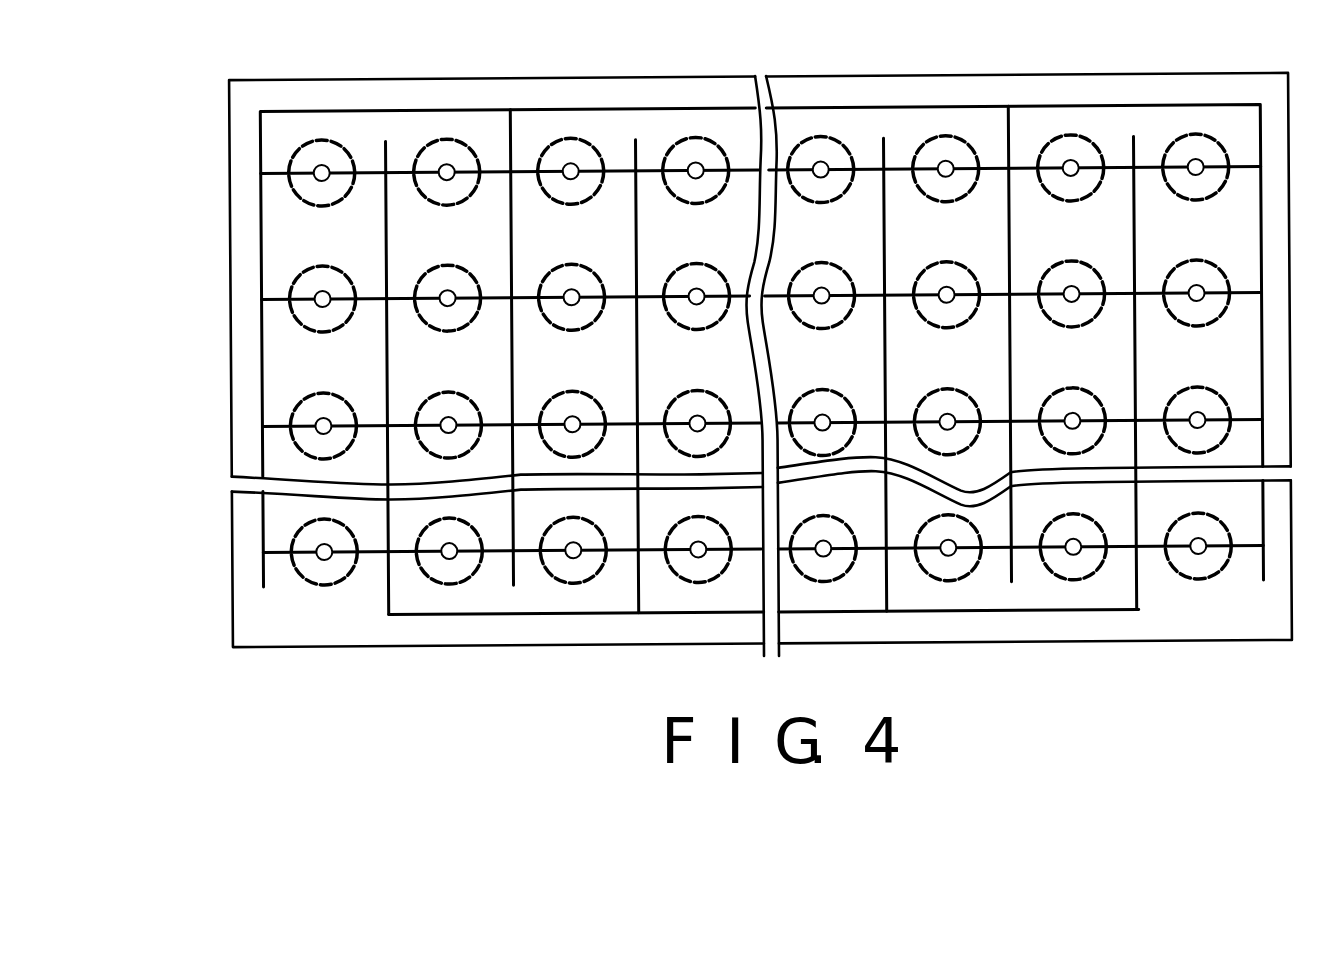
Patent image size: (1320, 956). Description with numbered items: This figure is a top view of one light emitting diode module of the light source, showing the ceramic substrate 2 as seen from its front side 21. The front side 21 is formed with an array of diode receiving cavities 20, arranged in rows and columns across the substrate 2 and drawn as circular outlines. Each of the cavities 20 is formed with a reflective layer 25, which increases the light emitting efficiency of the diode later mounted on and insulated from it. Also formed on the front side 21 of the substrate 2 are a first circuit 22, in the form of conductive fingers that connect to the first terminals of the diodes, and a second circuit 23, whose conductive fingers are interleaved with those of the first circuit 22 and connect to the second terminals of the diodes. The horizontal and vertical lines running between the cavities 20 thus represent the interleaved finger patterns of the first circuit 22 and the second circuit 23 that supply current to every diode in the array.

The ceramic substrate 2 is at (243, 246).
The diode receiving cavity 20 is at (290, 192).
The front side 21 is at (652, 133).
The first circuit 22 is at (515, 140).
The second circuit 23 is at (492, 613).
The reflective layer 25 is at (714, 147).